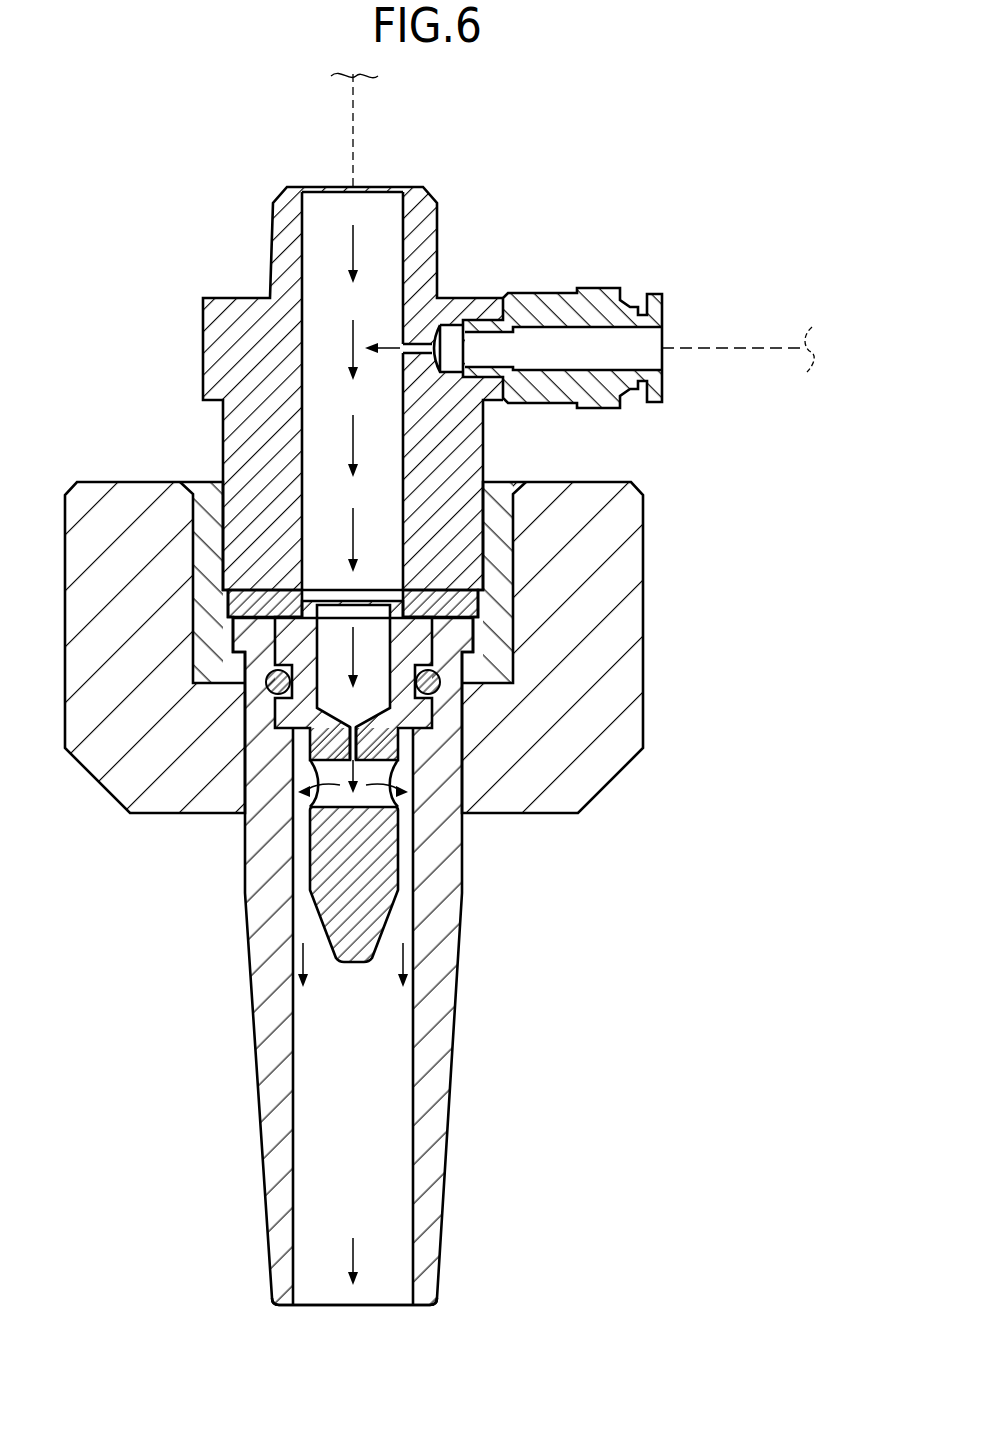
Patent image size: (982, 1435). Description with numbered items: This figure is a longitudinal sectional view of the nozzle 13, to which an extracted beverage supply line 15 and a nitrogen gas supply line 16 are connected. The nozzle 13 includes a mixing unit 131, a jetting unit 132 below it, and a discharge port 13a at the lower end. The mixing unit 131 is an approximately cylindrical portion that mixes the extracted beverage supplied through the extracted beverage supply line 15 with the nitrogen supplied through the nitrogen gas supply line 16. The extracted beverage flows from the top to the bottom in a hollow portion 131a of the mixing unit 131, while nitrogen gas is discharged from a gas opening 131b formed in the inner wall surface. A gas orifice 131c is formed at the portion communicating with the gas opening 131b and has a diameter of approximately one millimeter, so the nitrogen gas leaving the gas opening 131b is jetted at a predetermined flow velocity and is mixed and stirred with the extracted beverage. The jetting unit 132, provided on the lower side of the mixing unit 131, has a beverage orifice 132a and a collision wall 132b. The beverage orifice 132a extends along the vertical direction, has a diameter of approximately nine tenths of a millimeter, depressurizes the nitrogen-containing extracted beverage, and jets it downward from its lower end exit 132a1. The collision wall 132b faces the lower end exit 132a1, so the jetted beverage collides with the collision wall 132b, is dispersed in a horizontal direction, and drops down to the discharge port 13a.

The nozzle 13 is at (147, 889).
The discharge port 13a is at (291, 1306).
The extracted beverage supply line 15 is at (356, 146).
The nitrogen gas supply line 16 is at (608, 282).
The mixing unit 131 is at (286, 257).
The hollow portion 131a is at (285, 410).
The gas opening 131b is at (434, 324).
The gas orifice 131c is at (414, 344).
The jetting unit 132 is at (331, 993).
The beverage orifice 132a is at (345, 790).
The lower end exit 132a1 is at (356, 754).
The collision wall 132b is at (291, 800).